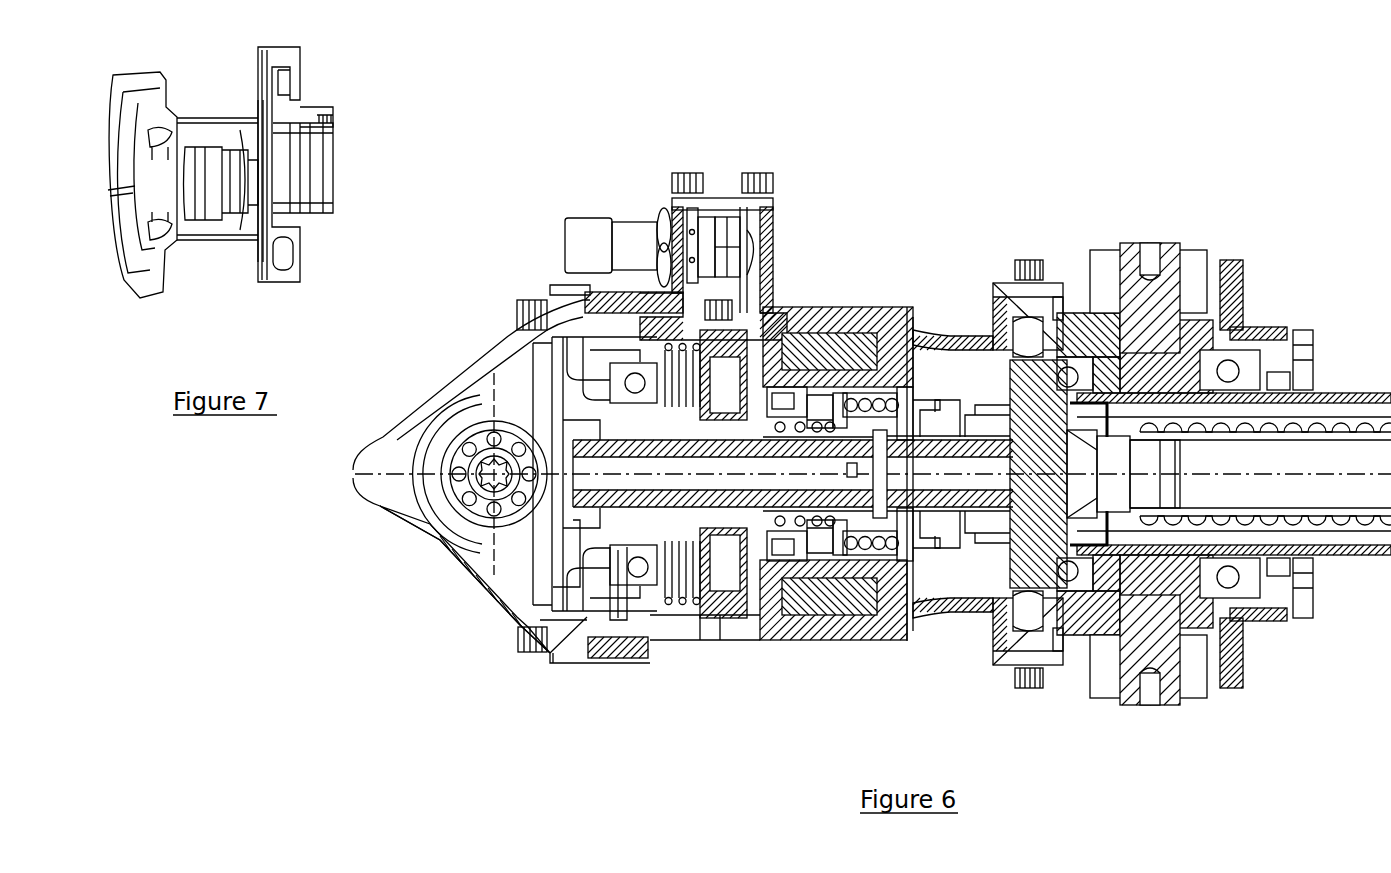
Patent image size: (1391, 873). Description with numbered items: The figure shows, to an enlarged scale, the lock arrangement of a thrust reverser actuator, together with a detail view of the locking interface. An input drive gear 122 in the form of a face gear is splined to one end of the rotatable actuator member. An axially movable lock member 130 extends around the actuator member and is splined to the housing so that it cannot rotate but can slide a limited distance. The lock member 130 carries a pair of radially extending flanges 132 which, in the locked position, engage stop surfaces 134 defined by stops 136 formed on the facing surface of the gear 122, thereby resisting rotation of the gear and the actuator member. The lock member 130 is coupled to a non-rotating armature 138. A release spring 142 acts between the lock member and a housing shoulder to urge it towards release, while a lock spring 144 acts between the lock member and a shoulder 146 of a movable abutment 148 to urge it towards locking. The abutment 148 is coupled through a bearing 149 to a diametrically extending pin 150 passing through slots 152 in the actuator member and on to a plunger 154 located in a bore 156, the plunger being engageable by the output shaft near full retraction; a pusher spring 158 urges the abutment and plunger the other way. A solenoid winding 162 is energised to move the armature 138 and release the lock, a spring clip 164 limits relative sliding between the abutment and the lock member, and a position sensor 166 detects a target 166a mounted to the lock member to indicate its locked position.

In FIG. 7, the input drive gear 122 is at (178, 255).
In FIG. 6, the input drive gear 122 is at (556, 662).
In FIG. 7, the lock member 130 is at (310, 65).
In FIG. 6, the lock member 130 is at (688, 595).
In FIG. 7, the radially extending flanges 132 is at (270, 110).
In FIG. 6, the radially extending flanges 132 is at (705, 560).
In FIG. 7, the stop surfaces 134 is at (253, 120).
In FIG. 7, the stops 136 is at (230, 240).
In FIG. 6, the armature 138 is at (765, 570).
In FIG. 6, the release spring 142 is at (665, 617).
In FIG. 6, the lock spring 144 is at (823, 605).
In FIG. 6, the shoulder 146 is at (843, 520).
In FIG. 6, the movable abutment 148 is at (858, 400).
In FIG. 6, the bearing 149 is at (862, 428).
In FIG. 6, the pin 150 is at (867, 505).
In FIG. 6, the slots 152 is at (893, 510).
In FIG. 6, the plunger 154 is at (938, 515).
In FIG. 6, the bore 156 is at (993, 605).
In FIG. 6, the pusher spring 158 is at (843, 515).
In FIG. 6, the solenoid winding 162 is at (822, 337).
In FIG. 6, the spring clip 164 is at (765, 350).
In FIG. 6, the position sensor 166 is at (630, 215).
In FIG. 6, the target 166a is at (742, 232).